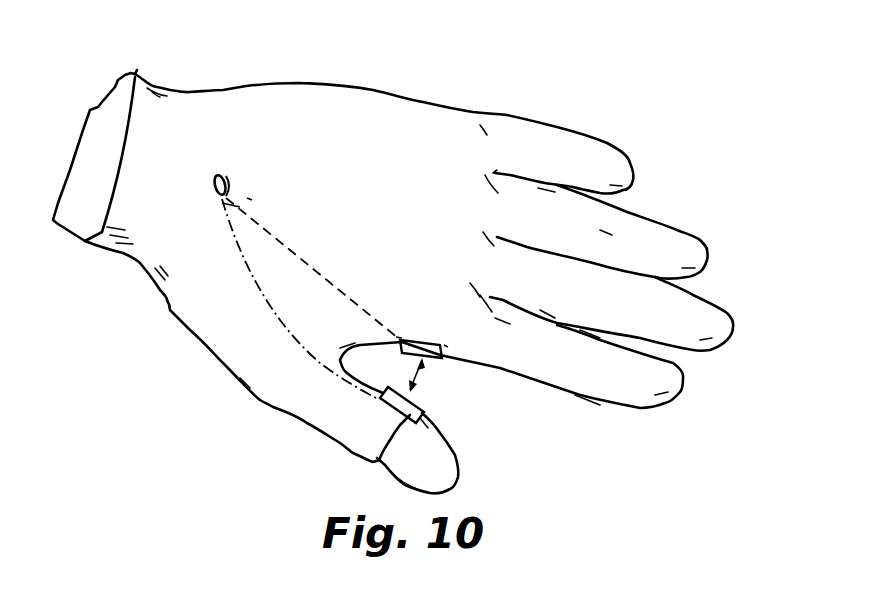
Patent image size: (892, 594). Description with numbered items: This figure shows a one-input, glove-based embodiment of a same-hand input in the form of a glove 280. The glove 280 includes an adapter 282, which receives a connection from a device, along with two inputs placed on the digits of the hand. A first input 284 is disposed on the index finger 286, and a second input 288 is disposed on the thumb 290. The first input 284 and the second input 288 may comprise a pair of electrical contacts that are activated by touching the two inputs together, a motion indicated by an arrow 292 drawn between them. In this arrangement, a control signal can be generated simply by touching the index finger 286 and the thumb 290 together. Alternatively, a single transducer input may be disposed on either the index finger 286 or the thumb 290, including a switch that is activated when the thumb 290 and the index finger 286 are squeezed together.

The glove 280 is at (374, 88).
The adapter 282 is at (234, 190).
The first input 284 is at (437, 347).
The index finger 286 is at (681, 380).
The second input 288 is at (380, 460).
The thumb 290 is at (458, 462).
The arrow 292 is at (422, 378).